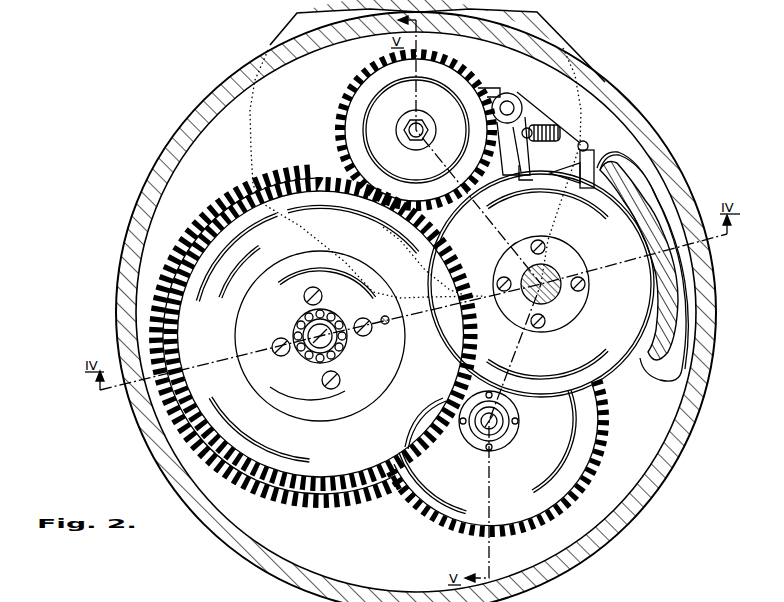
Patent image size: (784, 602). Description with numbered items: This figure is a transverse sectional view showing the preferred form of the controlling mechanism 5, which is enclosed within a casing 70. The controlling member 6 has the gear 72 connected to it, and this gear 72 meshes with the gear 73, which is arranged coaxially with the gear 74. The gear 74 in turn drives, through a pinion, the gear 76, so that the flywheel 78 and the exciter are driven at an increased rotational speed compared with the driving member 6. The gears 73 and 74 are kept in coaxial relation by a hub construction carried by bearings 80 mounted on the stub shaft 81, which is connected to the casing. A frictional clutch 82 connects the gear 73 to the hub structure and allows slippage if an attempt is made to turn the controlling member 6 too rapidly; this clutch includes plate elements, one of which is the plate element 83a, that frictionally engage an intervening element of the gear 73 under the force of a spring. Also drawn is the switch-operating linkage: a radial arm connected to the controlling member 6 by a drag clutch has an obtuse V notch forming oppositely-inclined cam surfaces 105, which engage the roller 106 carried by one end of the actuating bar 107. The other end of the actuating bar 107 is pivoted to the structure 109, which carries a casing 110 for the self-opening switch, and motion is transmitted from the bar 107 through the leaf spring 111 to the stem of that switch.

The controlling mechanism 5 is at (700, 487).
The controlling member 6 is at (286, 28).
The casing 70 is at (693, 410).
The gear 72 is at (365, 100).
The gear 73 is at (300, 210).
The gear 74 is at (216, 202).
The gear 76 is at (587, 444).
The flywheel 78 is at (600, 360).
The bearings 80 is at (300, 333).
The stub shaft 81 is at (335, 352).
The frictional clutch 82 is at (385, 325).
The plate element 83a is at (332, 410).
The cam surfaces 105 is at (494, 90).
The roller 106 is at (519, 92).
The actuating bar 107 is at (523, 172).
The structure 109 is at (588, 144).
The casing 110 is at (585, 177).
The leaf spring 111 is at (541, 143).